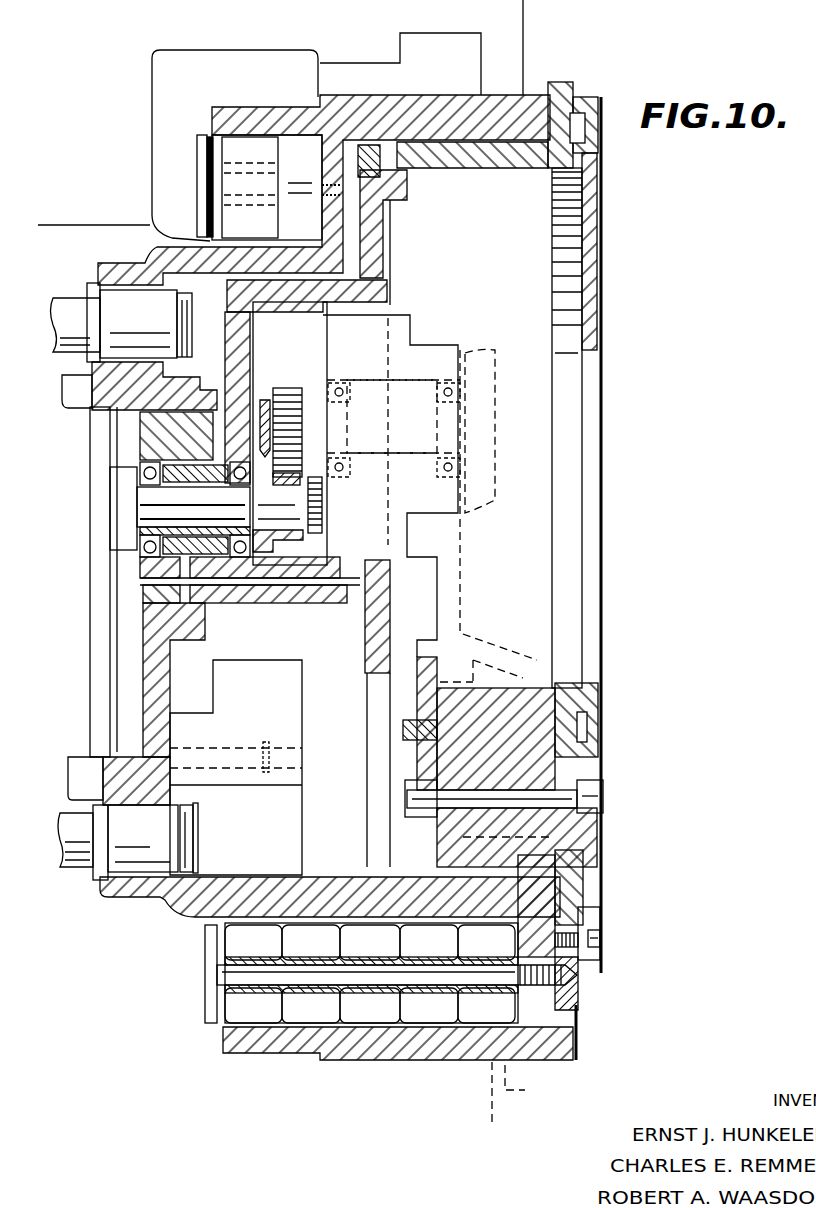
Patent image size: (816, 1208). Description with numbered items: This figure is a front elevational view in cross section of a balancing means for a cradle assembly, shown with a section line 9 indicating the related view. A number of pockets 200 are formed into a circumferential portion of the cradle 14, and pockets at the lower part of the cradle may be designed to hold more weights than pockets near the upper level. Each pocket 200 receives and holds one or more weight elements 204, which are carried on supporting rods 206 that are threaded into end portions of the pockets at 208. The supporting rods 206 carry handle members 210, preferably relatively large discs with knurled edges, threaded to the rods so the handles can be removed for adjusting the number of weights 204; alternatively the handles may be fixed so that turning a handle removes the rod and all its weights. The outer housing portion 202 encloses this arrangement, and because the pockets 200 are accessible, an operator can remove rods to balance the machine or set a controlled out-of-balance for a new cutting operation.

The section line 9- 9 is at (200, 20).
The cradle 14 is at (609, 905).
The pockets 200 is at (293, 135).
The housing end plate 202 is at (530, 97).
The weight elements 204 is at (210, 240).
The supporting rods 206 is at (363, 975).
The threaded end portion of pocket 208 is at (578, 992).
The handle members 210 is at (207, 948).